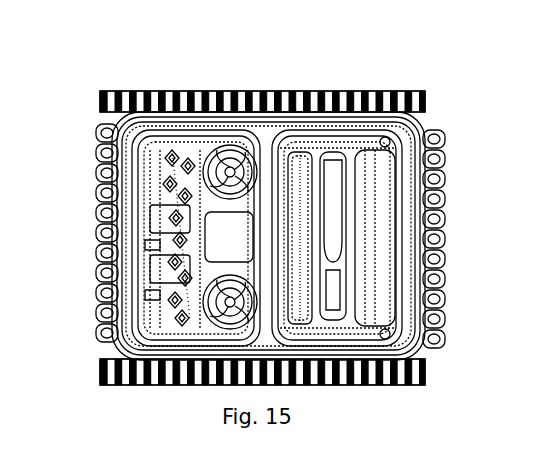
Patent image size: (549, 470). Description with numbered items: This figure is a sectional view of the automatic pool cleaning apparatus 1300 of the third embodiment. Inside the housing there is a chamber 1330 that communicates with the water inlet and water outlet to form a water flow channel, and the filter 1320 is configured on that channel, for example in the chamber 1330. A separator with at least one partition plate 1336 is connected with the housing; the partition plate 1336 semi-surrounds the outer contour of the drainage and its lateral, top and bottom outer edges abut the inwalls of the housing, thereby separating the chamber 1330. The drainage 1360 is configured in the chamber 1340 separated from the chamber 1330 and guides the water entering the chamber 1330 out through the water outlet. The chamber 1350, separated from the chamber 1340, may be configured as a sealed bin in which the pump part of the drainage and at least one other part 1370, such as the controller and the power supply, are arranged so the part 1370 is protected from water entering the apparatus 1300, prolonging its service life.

The automatic pool cleaning apparatus 1300 is at (258, 42).
The filter 1320 is at (420, 346).
The chamber 1330 is at (323, 184).
The partition plate 1336 is at (278, 190).
The chamber 1340 is at (202, 155).
The chamber 1350 is at (104, 128).
The drainage 1360 is at (206, 112).
The part 1370 is at (165, 205).